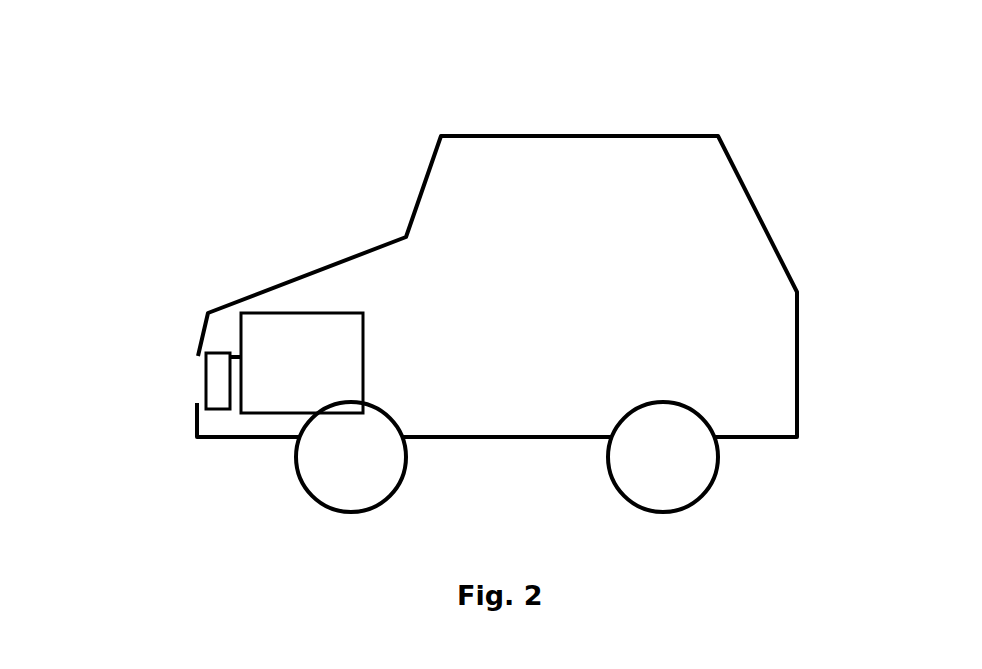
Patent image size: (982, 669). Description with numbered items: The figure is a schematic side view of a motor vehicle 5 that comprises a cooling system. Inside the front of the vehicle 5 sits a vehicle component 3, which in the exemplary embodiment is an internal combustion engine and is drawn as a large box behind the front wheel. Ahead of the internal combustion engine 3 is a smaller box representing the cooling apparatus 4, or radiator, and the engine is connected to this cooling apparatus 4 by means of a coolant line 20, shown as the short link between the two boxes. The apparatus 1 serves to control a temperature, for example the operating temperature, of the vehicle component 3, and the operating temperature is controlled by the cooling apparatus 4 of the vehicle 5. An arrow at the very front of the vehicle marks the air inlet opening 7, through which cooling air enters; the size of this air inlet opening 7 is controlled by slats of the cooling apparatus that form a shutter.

The vehicle 5 is at (518, 158).
The vehicle component 3 is at (273, 380).
The apparatus 1 is at (218, 370).
The cooling apparatus 4 is at (217, 390).
The coolant line 20 is at (236, 357).
The air inlet opening 7 is at (182, 379).